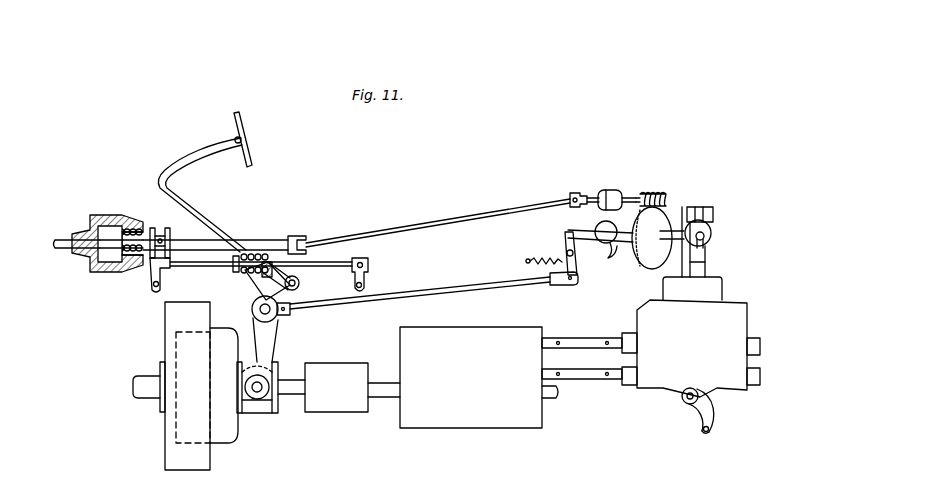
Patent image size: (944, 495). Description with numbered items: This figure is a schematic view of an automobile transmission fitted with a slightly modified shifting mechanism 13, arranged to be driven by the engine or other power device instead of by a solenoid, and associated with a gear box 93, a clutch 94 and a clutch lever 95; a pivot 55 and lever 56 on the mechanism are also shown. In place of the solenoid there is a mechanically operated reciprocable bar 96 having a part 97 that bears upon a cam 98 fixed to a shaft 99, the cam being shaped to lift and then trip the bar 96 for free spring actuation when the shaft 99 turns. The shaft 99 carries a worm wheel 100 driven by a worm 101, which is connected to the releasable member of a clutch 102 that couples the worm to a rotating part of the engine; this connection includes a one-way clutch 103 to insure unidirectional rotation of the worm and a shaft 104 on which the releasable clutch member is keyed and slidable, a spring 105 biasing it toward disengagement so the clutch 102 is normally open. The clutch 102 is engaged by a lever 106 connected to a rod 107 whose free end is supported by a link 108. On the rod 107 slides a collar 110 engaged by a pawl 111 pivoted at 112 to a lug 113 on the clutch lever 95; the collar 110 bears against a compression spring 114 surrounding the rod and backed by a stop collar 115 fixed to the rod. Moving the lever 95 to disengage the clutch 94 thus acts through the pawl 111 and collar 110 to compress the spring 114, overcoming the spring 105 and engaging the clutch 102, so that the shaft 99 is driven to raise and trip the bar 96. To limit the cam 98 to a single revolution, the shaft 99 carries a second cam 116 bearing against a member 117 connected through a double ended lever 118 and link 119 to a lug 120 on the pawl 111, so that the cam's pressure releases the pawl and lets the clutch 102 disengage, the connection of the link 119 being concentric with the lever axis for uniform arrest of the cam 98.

The shifting mechanism 13 is at (691, 337).
The pivot 55 is at (697, 386).
The valve lever 56 is at (703, 419).
The gear box 93 is at (487, 428).
The clutch 94 is at (222, 444).
The clutch lever 95 is at (200, 146).
The reciprocable bar 96 is at (700, 263).
The part of bar 97 is at (708, 211).
The cam 98 is at (706, 233).
The shaft 99 is at (662, 264).
The worm wheel 100 is at (642, 262).
The worm 101 is at (662, 186).
The clutch 102 is at (130, 200).
The one-way clutch 103 is at (615, 178).
The shaft 104 is at (256, 226).
The spring 105 is at (141, 266).
The lever 106 is at (164, 271).
The rod 107 is at (337, 262).
The link 108 is at (367, 275).
The collar 110 is at (293, 241).
The pawl 111 is at (246, 293).
The pivot 112 is at (299, 282).
The lug 113 is at (291, 290).
The compression spring 114 is at (240, 253).
The stop collar 115 is at (232, 273).
The second cam 116 is at (598, 222).
The member 117 is at (583, 252).
The double ended lever 118 is at (566, 246).
The link 119 is at (461, 277).
The lug 120 is at (293, 318).